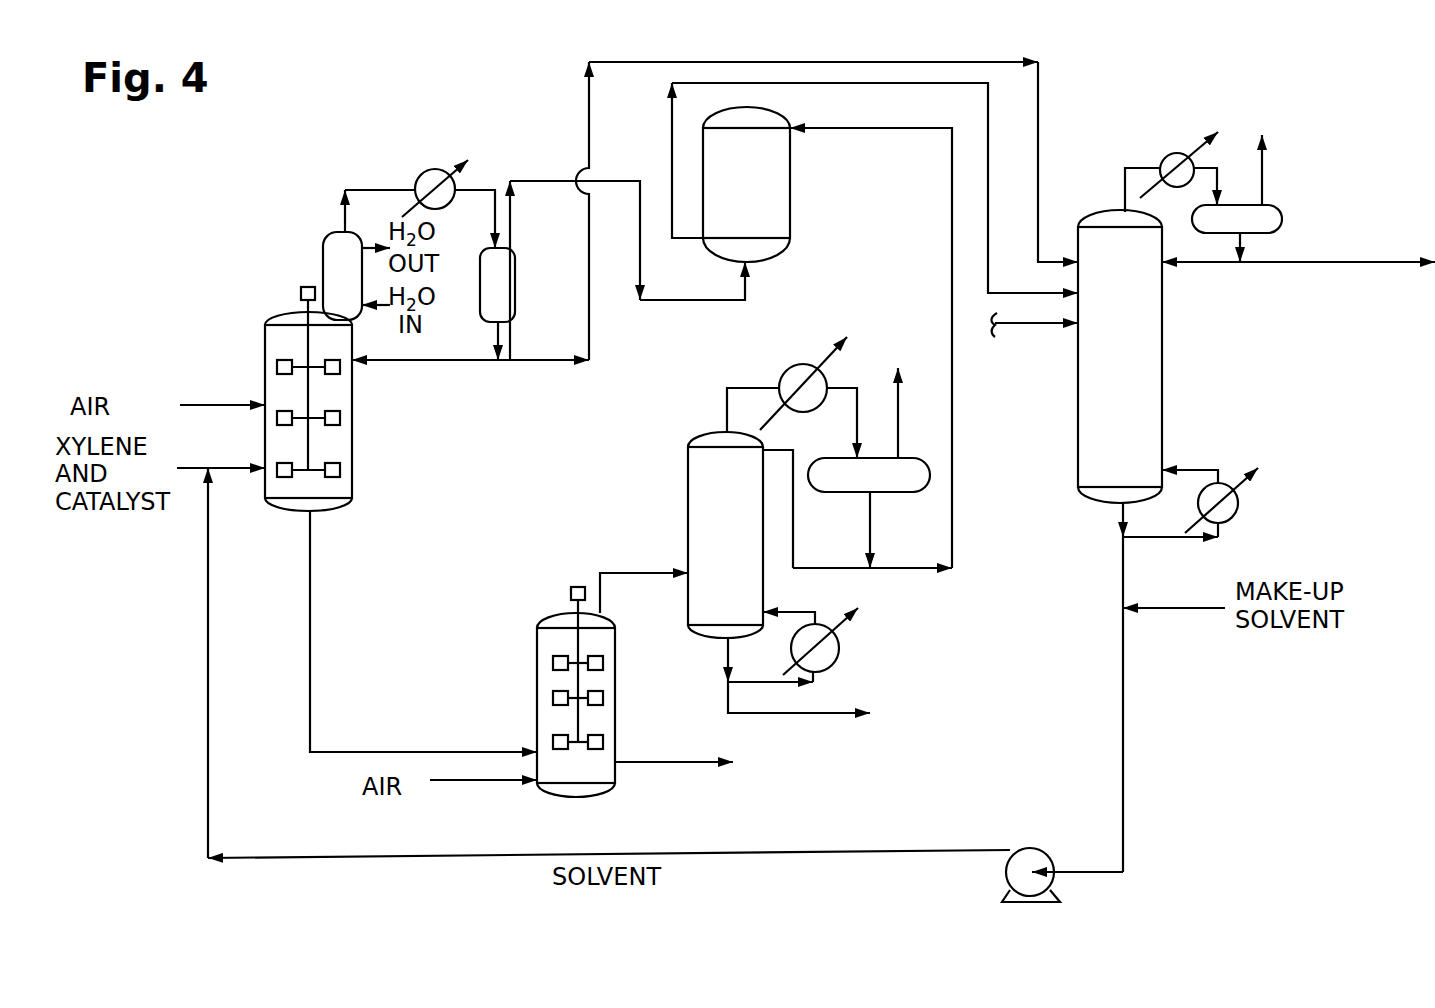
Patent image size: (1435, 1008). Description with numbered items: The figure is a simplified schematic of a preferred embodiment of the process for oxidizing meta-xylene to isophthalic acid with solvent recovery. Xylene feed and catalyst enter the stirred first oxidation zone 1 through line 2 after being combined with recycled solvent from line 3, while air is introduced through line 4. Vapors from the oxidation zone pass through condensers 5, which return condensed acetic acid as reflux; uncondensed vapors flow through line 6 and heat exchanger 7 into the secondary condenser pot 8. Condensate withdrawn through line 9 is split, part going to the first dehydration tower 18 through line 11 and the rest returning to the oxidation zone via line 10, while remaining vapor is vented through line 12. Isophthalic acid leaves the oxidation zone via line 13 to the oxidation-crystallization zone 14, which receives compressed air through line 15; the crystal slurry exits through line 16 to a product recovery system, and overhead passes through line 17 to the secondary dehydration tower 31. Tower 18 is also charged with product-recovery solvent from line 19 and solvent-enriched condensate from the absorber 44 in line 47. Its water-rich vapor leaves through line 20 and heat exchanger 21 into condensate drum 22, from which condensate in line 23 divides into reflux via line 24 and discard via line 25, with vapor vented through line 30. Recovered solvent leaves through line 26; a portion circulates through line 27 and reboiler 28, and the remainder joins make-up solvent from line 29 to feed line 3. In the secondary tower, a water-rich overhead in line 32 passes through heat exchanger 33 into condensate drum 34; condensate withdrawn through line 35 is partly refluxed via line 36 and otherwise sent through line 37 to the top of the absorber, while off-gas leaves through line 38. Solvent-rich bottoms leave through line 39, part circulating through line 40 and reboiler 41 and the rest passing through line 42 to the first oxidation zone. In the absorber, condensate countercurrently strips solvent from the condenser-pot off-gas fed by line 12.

The first oxidation zone 1 is at (262, 335).
The line 2 is at (230, 470).
The line 3 is at (208, 632).
The line 4 is at (210, 405).
The condensers 5 is at (323, 240).
The line 6 is at (372, 188).
The heat exchanger 7 is at (435, 183).
The secondary condenser pot 8 is at (507, 282).
The line 9 is at (505, 323).
The line 10 is at (440, 360).
The line 11 is at (600, 62).
The line 12 is at (530, 178).
The line 13 is at (310, 580).
The oxidation-crystallization zone 14 is at (537, 665).
The line 15 is at (470, 780).
The line 16 is at (655, 762).
The line 17 is at (620, 572).
The first dehydration tower 18 is at (1140, 398).
The line 19 is at (1027, 323).
The line 20 is at (1137, 165).
The heat exchanger 21 is at (1178, 155).
The condensate drum 22 is at (1265, 213).
The line 23 is at (1243, 240).
The line 24 is at (1222, 262).
The line 25 is at (1350, 262).
The line 26 is at (1120, 510).
The line 27 is at (1183, 537).
The reboiler 28 is at (1228, 503).
The line 29 is at (1195, 608).
The line 30 is at (1265, 165).
The secondary dehydration tower 31 is at (705, 480).
The line 32 is at (727, 408).
The heat exchanger 33 is at (803, 372).
The condensate drum 34 is at (890, 490).
The line 35 is at (868, 523).
The line 36 is at (843, 573).
The line 37 is at (917, 573).
The line 38 is at (898, 405).
The line 39 is at (725, 648).
The line 40 is at (775, 682).
The reboiler 41 is at (825, 650).
The line 42 is at (840, 713).
The absorber 44 is at (772, 183).
The line 47 is at (670, 145).